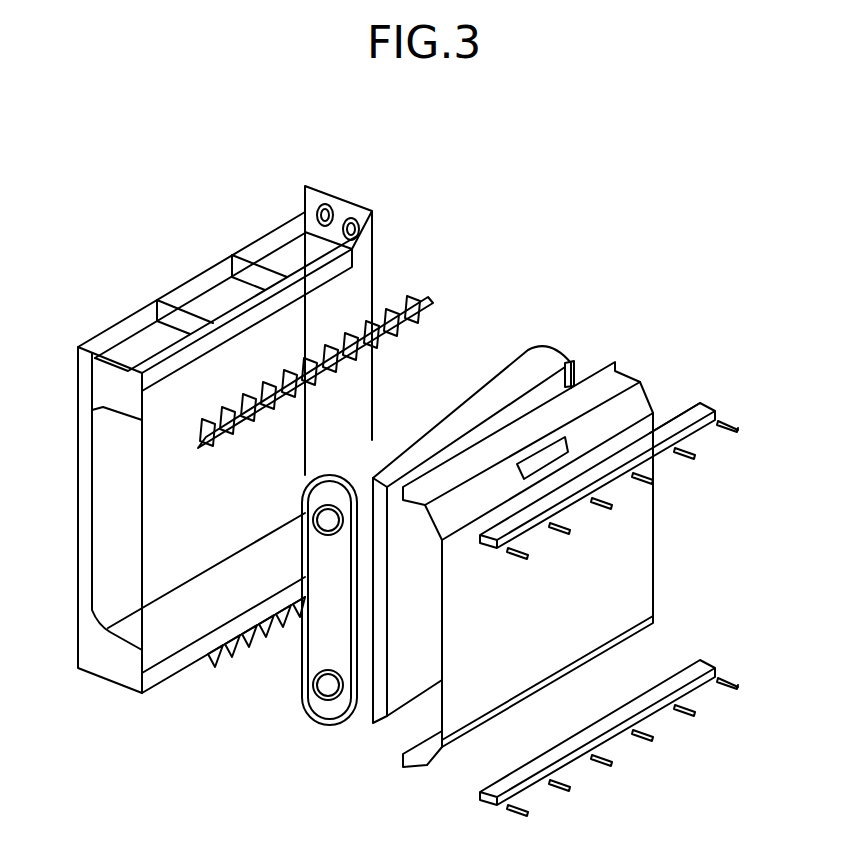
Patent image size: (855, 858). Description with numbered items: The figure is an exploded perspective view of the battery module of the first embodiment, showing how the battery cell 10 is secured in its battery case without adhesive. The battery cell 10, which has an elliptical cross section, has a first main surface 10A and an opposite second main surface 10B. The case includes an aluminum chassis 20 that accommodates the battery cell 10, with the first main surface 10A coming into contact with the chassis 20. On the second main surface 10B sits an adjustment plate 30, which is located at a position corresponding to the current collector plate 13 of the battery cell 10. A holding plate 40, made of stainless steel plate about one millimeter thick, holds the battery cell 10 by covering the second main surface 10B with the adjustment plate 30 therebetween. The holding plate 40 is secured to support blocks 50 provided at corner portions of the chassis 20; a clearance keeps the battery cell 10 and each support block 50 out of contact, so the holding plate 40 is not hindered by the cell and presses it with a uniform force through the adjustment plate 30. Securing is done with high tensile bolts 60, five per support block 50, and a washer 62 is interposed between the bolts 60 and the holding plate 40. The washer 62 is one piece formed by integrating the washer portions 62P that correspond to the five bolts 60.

The battery cell 10 is at (547, 352).
The first main surface 10A is at (357, 690).
The second main surface 10B is at (305, 637).
The current collector plate 13 is at (327, 522).
The chassis 20 is at (347, 203).
The adjustment plate 30 is at (568, 360).
The holding plate 40 is at (625, 380).
The support block 50 is at (413, 297).
The bolt 60 is at (732, 418).
The washer 62 is at (700, 402).
The washer portion 62P is at (672, 413).